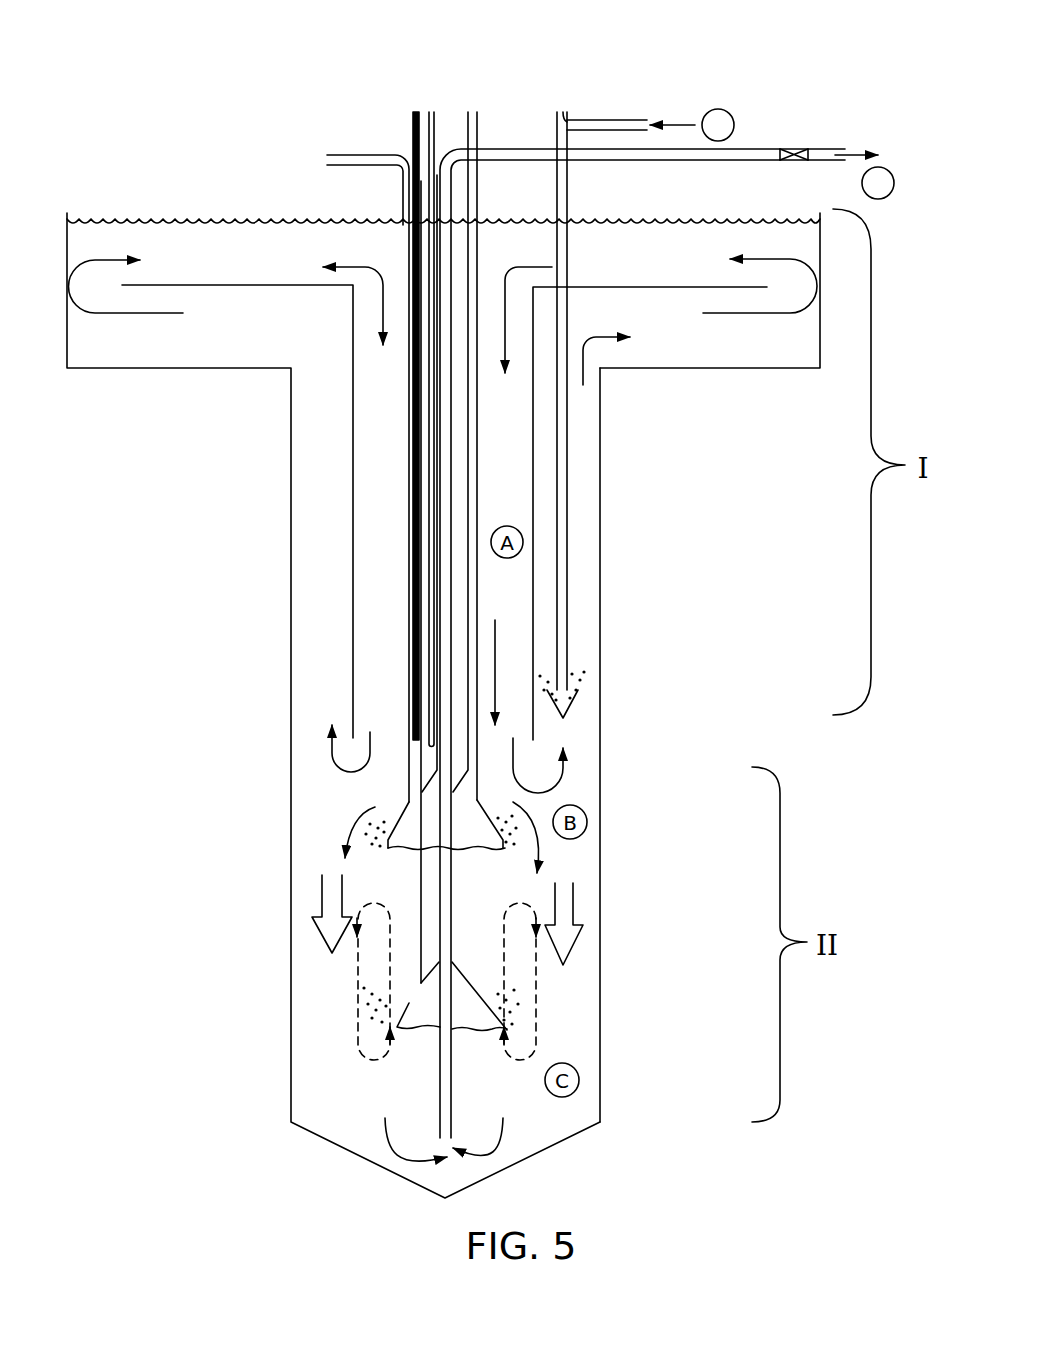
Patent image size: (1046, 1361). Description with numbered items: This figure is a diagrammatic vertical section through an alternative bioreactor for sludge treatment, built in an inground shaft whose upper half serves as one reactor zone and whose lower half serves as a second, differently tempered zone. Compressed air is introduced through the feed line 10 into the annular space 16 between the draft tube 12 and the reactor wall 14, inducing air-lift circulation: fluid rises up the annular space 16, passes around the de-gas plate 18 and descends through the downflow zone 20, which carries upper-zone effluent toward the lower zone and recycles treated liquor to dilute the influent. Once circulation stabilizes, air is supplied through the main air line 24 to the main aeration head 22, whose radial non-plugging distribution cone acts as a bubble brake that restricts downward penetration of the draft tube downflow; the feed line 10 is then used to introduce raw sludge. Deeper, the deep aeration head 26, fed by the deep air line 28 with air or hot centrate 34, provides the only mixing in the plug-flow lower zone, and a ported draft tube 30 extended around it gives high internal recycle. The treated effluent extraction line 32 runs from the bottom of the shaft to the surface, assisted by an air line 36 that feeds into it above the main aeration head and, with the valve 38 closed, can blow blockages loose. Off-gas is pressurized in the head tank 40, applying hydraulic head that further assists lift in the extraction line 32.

The feed line 10 is at (563, 107).
The draft tube 12 is at (533, 513).
The reactor wall 14 is at (600, 577).
The annular space (upflow section) 16 is at (647, 625).
The de-gas plate 18 is at (220, 287).
The downflow zone 20 is at (442, 598).
The main aeration head 22 is at (412, 813).
The main air line 24 is at (473, 107).
The deep aeration head 26 is at (407, 1023).
The deep air line 28 is at (327, 158).
The ported draft tube 30 is at (510, 1025).
The treated effluent extraction line 32 is at (438, 1100).
The hot centrate 34 is at (416, 107).
The air line 36 is at (432, 107).
The valve 38 is at (797, 148).
The head tank 40 is at (820, 315).